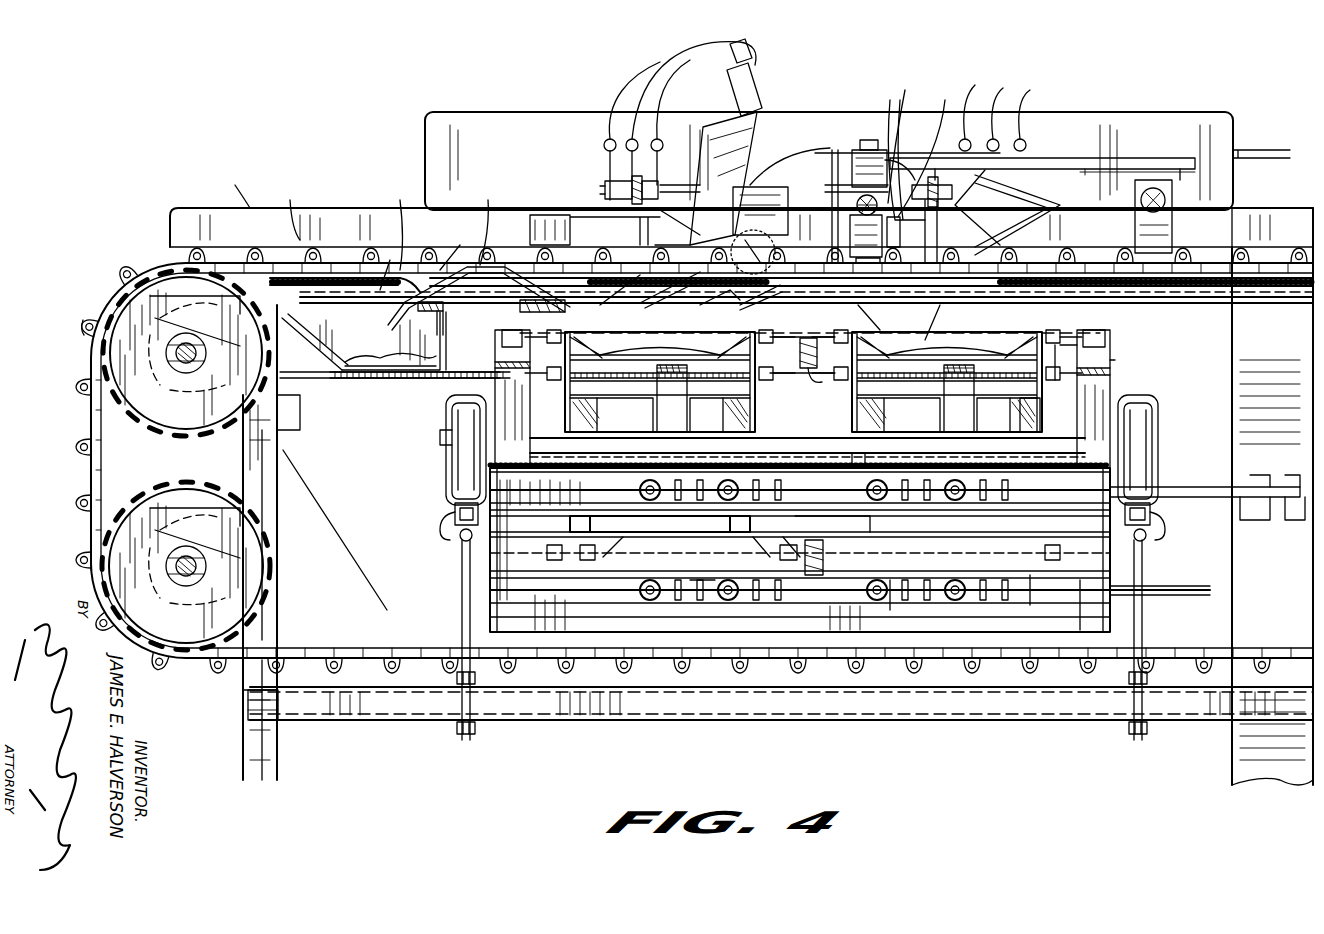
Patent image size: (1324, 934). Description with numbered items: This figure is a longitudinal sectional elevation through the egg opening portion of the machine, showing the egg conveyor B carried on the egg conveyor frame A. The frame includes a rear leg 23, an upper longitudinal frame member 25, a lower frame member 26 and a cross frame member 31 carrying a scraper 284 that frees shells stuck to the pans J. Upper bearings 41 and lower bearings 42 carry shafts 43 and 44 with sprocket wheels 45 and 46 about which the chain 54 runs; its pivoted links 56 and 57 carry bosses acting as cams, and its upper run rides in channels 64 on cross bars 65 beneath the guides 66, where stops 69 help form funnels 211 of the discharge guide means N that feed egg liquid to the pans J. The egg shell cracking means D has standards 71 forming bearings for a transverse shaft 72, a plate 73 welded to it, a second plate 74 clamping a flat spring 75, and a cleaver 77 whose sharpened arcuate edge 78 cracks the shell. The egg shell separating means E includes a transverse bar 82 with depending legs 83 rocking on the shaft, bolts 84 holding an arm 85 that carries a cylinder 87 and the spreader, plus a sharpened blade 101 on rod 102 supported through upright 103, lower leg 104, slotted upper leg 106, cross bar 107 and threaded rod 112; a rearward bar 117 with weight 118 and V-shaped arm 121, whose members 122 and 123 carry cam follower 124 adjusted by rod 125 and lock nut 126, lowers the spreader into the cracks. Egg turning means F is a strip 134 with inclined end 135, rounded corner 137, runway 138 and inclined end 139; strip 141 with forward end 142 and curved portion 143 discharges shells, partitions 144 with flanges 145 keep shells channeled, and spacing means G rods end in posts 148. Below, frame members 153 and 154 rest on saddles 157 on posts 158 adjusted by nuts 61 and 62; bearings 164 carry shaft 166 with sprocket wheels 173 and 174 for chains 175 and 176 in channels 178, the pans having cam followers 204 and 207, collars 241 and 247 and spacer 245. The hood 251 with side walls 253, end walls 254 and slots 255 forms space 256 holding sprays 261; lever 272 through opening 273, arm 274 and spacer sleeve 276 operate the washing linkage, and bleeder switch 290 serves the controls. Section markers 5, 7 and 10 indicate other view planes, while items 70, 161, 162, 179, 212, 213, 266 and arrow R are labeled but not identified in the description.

The section line 5- 5 is at (1288, 62).
The section line 7- 7 is at (1275, 565).
The section line 10- 10 is at (781, 417).
The rear leg 23 is at (285, 758).
The upper longitudinal frame member 25 is at (1300, 300).
The lower longitudinal frame member 26 is at (725, 722).
The cross frame member 31 is at (250, 725).
The upper bearing 41 is at (195, 318).
The lower bearing 42 is at (200, 529).
The shaft 43 is at (186, 373).
The shaft 44 is at (186, 586).
The sprocket wheel 45 is at (290, 425).
The sprocket wheel 46 is at (93, 550).
The chain 54 is at (92, 440).
The pivoted link 56 is at (92, 368).
The pivoted link 57 is at (85, 325).
The nut 61 is at (1148, 680).
The nut 62 is at (1138, 735).
The channel 64 is at (245, 212).
The cross bar 65 is at (475, 330).
The guide 66 is at (1265, 285).
The stop 69 is at (985, 300).
The bracket 70 is at (740, 307).
The standard 71 is at (875, 305).
The transverse shaft 72 is at (930, 175).
The plate 73 is at (850, 215).
The second plate 74 is at (855, 135).
The flat longitudinal spring 75 is at (808, 190).
The cleaver 77 is at (720, 285).
The sharpened arcuate edge 78 is at (790, 250).
The transverse bar 82 is at (862, 150).
The depending leg 83 is at (820, 233).
The bolt 84 is at (875, 148).
The arm 85 is at (765, 150).
The cylinder 87 is at (758, 95).
The sharpened blade 101 is at (675, 225).
The rod 102 is at (575, 235).
The upright 103 is at (670, 275).
The lower leg 104 is at (650, 185).
The upper leg 106 is at (625, 185).
The cross bar 107 is at (625, 185).
The threaded rod 112 is at (685, 200).
The rearwardly extending bar 117 is at (1135, 158).
The weight 118 is at (1188, 160).
The V-shaped arm 121 is at (1120, 210).
The upper member 122 is at (1045, 185).
The lower member 123 is at (1035, 250).
The cam follower 124 is at (985, 235).
The threaded rod 125 is at (978, 212).
The lock nut 126 is at (1015, 170).
The strip 134 is at (455, 270).
The forward end 135 is at (548, 312).
The rounded corner 137 is at (448, 310).
The runway 138 is at (480, 268).
The inclined end 139 is at (398, 270).
The strip of metal 141 is at (168, 262).
The forward end 142 is at (292, 230).
The curved portion 143 is at (108, 312).
The partition 144 is at (250, 205).
The flange 145 is at (605, 183).
The post 148 is at (395, 360).
The longitudinal frame member 153 is at (455, 505).
The longitudinal frame member 154 is at (1155, 525).
The saddle 157 is at (1150, 548).
The post 158 is at (1145, 625).
The nut 161 is at (478, 680).
The nut 162 is at (478, 732).
The bearing 164 is at (1158, 425).
The shaft 166 is at (440, 452).
The sprocket wheel 173 is at (1112, 368).
The sprocket wheel 174 is at (495, 392).
The chain 175 is at (1115, 335).
The chain 176 is at (545, 368).
The channel 178 is at (1055, 395).
The piston 179 is at (1115, 395).
The cam follower 204 is at (1090, 540).
The cam follower 207 is at (745, 570).
The funnel 211 is at (605, 333).
The plate 212 is at (415, 295).
The plate 213 is at (320, 370).
The collar 241 is at (850, 338).
The longitudinal spacer 245 is at (815, 580).
The collar 247 is at (1070, 335).
The hood 251 is at (628, 480).
The side wall 253 is at (615, 620).
The end wall 254 is at (695, 620).
The slot 255 is at (1036, 565).
The confined space 256 is at (900, 630).
The spray 261 is at (1125, 400).
The plate 266 is at (1075, 632).
The depending lever 272 is at (895, 522).
The opening 273 is at (728, 523).
The depending arm 274 is at (1272, 478).
The spacer sleeve 276 is at (1215, 515).
The scraper 284 is at (248, 682).
The bleeder switch 290 is at (930, 303).
The egg conveyor frame A is at (245, 772).
The egg conveyor B is at (74, 490).
The egg shell cracking means D is at (767, 205).
The egg shell separating means E is at (752, 165).
The egg turning means F is at (517, 262).
The egg shell spacing means G is at (392, 268).
The pan J is at (1000, 590).
The discharge guide means N is at (770, 312).
The direction R is at (441, 690).